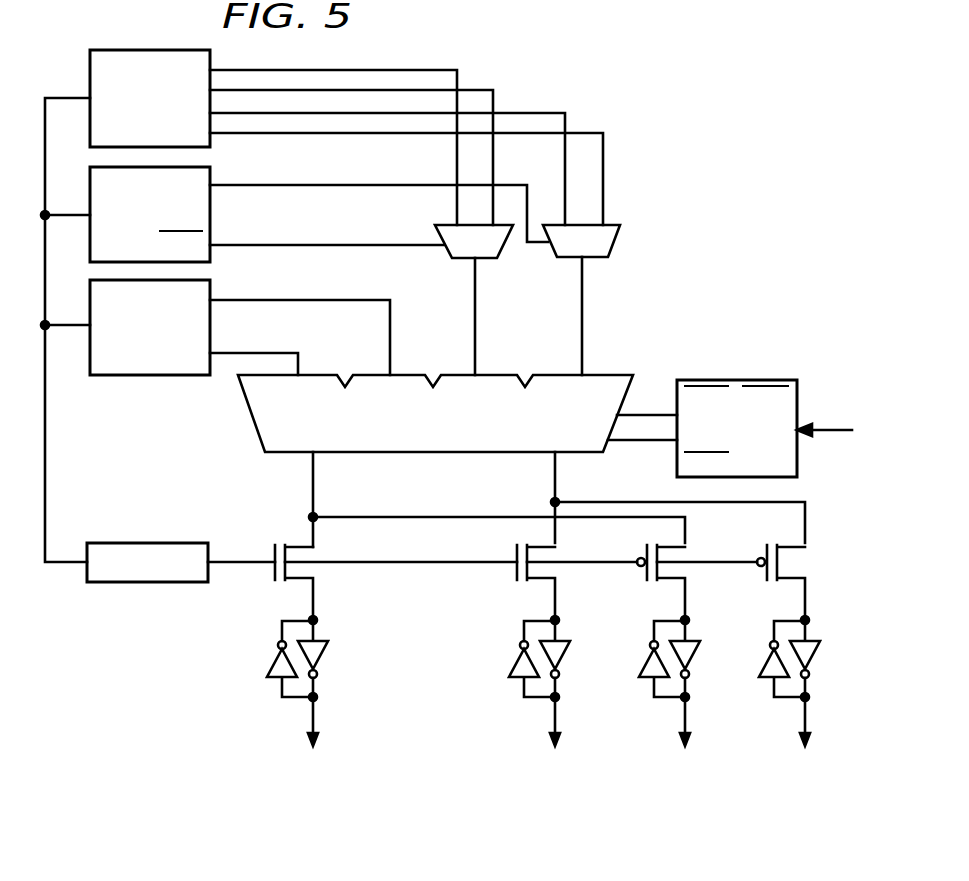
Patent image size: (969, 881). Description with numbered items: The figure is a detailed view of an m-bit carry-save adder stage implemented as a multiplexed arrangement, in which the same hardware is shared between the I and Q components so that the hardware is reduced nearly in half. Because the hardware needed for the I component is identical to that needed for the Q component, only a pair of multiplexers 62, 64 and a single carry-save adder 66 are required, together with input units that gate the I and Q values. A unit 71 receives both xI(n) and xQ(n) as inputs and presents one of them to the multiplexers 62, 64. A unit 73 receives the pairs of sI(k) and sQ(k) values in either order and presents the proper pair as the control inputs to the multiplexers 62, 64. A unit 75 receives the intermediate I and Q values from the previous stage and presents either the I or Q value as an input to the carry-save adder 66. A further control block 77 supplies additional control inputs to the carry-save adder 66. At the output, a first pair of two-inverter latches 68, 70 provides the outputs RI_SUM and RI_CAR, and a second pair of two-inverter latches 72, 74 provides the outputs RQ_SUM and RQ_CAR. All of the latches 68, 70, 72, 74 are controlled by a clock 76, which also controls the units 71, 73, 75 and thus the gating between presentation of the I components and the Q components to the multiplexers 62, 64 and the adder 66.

The unit 71 is at (112, 49).
The unit 73 is at (213, 172).
The unit 75 is at (213, 283).
The multiplexer 62 is at (452, 259).
The multiplexer 64 is at (612, 243).
The carry-save adder 66 is at (497, 375).
The control input register 77 is at (722, 379).
The clock 76 is at (145, 612).
The 2-inverter latch 68 is at (268, 679).
The 2-inverter latch 70 is at (510, 679).
The 2-inverter latch 72 is at (697, 641).
The 2-inverter latch 74 is at (818, 641).